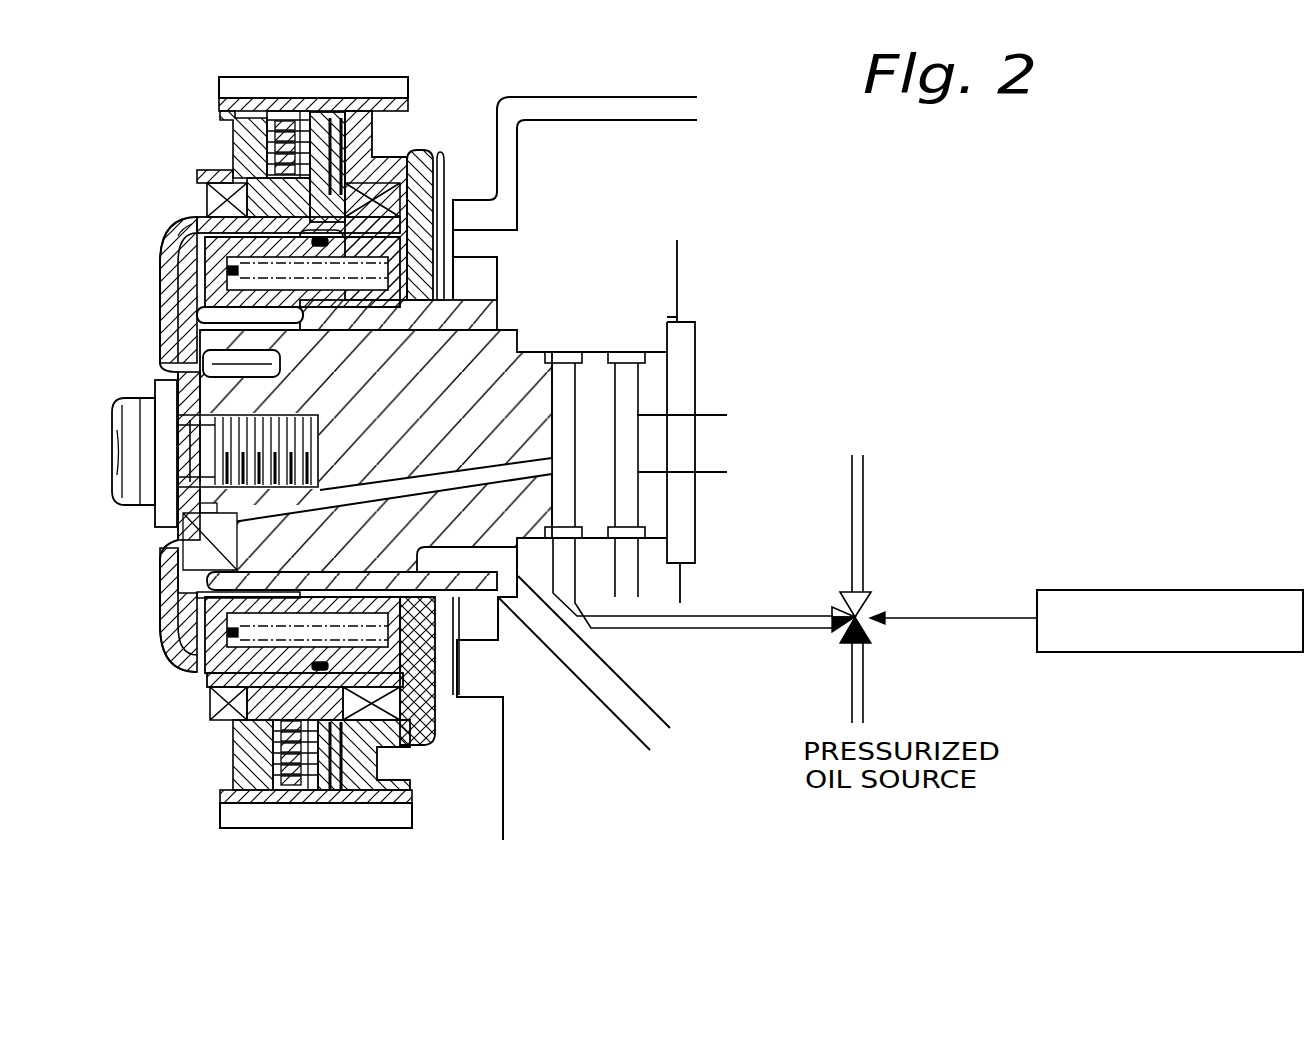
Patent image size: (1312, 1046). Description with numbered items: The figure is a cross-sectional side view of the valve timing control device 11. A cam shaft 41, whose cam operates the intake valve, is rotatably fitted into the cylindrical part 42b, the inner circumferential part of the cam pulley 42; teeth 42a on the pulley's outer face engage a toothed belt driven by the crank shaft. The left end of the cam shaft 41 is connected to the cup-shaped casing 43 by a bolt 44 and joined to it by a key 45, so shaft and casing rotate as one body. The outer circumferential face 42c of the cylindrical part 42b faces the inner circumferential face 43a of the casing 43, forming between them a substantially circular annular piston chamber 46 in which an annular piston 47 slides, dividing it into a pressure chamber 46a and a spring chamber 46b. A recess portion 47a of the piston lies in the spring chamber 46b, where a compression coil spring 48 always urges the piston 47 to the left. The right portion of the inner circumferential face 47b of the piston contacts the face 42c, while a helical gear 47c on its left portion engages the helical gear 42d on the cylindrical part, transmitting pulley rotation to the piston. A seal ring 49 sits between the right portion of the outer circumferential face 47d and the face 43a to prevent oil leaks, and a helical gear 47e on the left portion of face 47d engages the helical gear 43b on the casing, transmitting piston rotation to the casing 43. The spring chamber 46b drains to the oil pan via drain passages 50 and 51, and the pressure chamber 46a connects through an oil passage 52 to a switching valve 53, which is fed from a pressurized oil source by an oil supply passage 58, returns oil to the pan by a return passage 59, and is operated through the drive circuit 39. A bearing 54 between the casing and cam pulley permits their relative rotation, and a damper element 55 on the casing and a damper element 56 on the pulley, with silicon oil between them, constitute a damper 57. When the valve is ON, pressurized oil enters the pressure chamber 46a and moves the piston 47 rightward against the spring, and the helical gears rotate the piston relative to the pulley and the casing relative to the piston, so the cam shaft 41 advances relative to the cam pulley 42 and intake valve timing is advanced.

The valve timing control device 11 is at (610, 86).
The drive circuit 39 is at (1157, 590).
The cam shaft 41 is at (513, 363).
The cam pulley 42 is at (397, 163).
The teeth 42a is at (238, 82).
The cylindrical part 42b is at (443, 212).
The outer circumferential face of the cylindrical part 42c is at (433, 157).
The helical gear 42d is at (187, 290).
The casing 43 is at (200, 312).
The inner circumferential face of the casing 43a is at (353, 227).
The helical gear 43b is at (210, 190).
The bolt 44 is at (122, 452).
The key 45 is at (200, 357).
The piston chamber 46 is at (360, 660).
The pressure chamber 46a is at (200, 623).
The spring chamber 46b is at (397, 657).
The piston 47 is at (210, 640).
The recess portion 47a is at (215, 668).
The inner circumferential face of the piston 47b is at (322, 318).
The helical gear 47c is at (177, 243).
The outer circumferential face of the piston 47d is at (240, 140).
The helical gear 47e is at (210, 217).
The compression coil spring 48 is at (377, 710).
The seal ring 49 is at (320, 230).
The drain passage 50 is at (457, 647).
The drain passage 51 is at (623, 703).
The oil passage 52 is at (553, 463).
The switching valve 53 is at (845, 637).
The bearing 54 is at (390, 828).
The damper element 55 is at (287, 790).
The damper element 56 is at (240, 745).
The damper 57 is at (270, 795).
The oil supply passage 58 is at (867, 700).
The return passage 59 is at (867, 507).